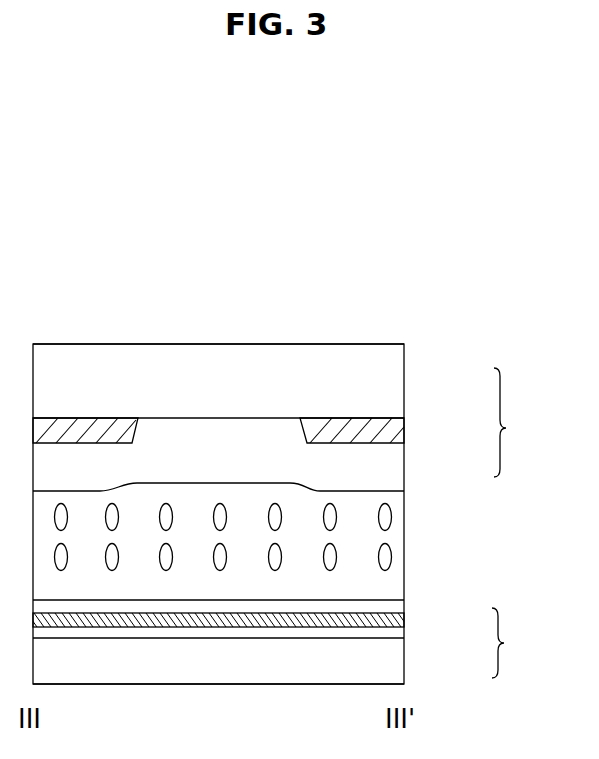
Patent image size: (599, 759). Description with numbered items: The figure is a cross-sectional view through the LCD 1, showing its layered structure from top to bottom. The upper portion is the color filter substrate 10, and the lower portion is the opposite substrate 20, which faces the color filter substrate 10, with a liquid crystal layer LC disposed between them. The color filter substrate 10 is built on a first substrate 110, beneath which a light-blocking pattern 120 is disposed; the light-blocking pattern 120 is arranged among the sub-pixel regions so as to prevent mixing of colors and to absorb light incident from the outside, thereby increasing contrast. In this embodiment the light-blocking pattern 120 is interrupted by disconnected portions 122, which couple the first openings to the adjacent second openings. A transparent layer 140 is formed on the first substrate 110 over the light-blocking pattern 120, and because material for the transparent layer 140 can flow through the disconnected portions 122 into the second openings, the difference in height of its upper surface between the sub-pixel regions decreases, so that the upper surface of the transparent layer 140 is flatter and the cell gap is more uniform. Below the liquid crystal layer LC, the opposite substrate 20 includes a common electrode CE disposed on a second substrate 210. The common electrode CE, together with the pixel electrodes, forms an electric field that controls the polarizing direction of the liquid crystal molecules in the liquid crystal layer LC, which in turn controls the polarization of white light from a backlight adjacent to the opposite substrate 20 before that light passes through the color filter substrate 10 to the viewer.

The LCD 1 is at (299, 447).
The color filter substrate 10 is at (519, 422).
The opposite substrate 20 is at (518, 643).
The first substrate 110 is at (395, 379).
The light-blocking pattern 120 is at (397, 419).
The disconnected portions 122 is at (232, 443).
The transparent layer 140 is at (395, 463).
The liquid crystal layer LC is at (396, 536).
The common electrode CE is at (404, 620).
The second substrate 210 is at (395, 663).